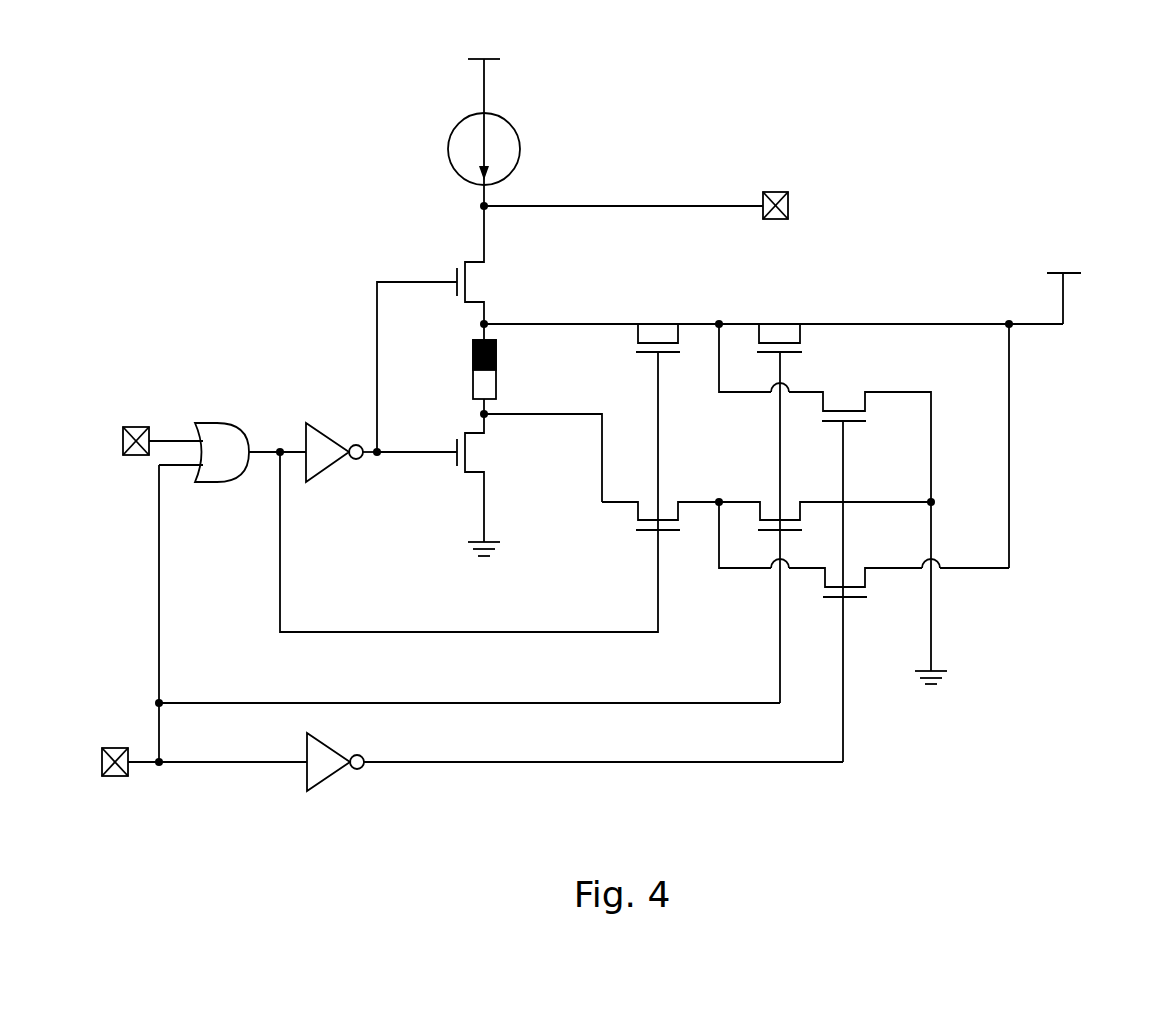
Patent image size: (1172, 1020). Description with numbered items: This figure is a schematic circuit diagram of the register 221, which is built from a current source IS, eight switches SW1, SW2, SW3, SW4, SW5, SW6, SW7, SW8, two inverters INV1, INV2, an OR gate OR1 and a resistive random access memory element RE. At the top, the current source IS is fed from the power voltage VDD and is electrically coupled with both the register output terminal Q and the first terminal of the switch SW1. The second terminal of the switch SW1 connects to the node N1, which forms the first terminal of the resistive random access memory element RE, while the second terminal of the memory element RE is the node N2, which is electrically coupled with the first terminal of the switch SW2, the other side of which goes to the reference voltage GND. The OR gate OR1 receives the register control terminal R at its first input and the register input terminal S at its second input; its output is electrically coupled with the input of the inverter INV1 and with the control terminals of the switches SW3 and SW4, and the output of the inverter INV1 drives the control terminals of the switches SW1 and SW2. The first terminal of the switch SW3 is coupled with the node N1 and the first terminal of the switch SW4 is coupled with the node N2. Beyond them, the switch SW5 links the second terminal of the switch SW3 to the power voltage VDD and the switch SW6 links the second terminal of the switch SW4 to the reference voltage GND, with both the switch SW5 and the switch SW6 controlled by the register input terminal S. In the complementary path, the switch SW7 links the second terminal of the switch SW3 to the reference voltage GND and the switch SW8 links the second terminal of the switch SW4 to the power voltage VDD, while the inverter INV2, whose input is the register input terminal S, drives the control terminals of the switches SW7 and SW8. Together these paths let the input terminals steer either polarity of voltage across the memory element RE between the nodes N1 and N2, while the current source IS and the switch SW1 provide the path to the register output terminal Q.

The register 221 is at (977, 168).
The current source IS is at (499, 159).
The switch SW1 is at (430, 329).
The switch SW2 is at (430, 478).
The switch SW3 is at (658, 319).
The switch SW4 is at (655, 531).
The switch SW5 is at (785, 495).
The switch SW6 is at (825, 497).
The switch SW7 is at (825, 543).
The switch SW8 is at (864, 567).
The resistive random access memory element RE is at (506, 369).
The node N1 is at (771, 310).
The node N2 is at (541, 456).
The OR gate OR1 is at (232, 436).
The inverter INV1 is at (339, 439).
The inverter INV2 is at (575, 773).
The register output terminal Q is at (651, 207).
The register control terminal R is at (151, 440).
The register input terminal S is at (428, 621).
The power voltage VDD is at (773, 175).
The reference voltage GND is at (713, 634).